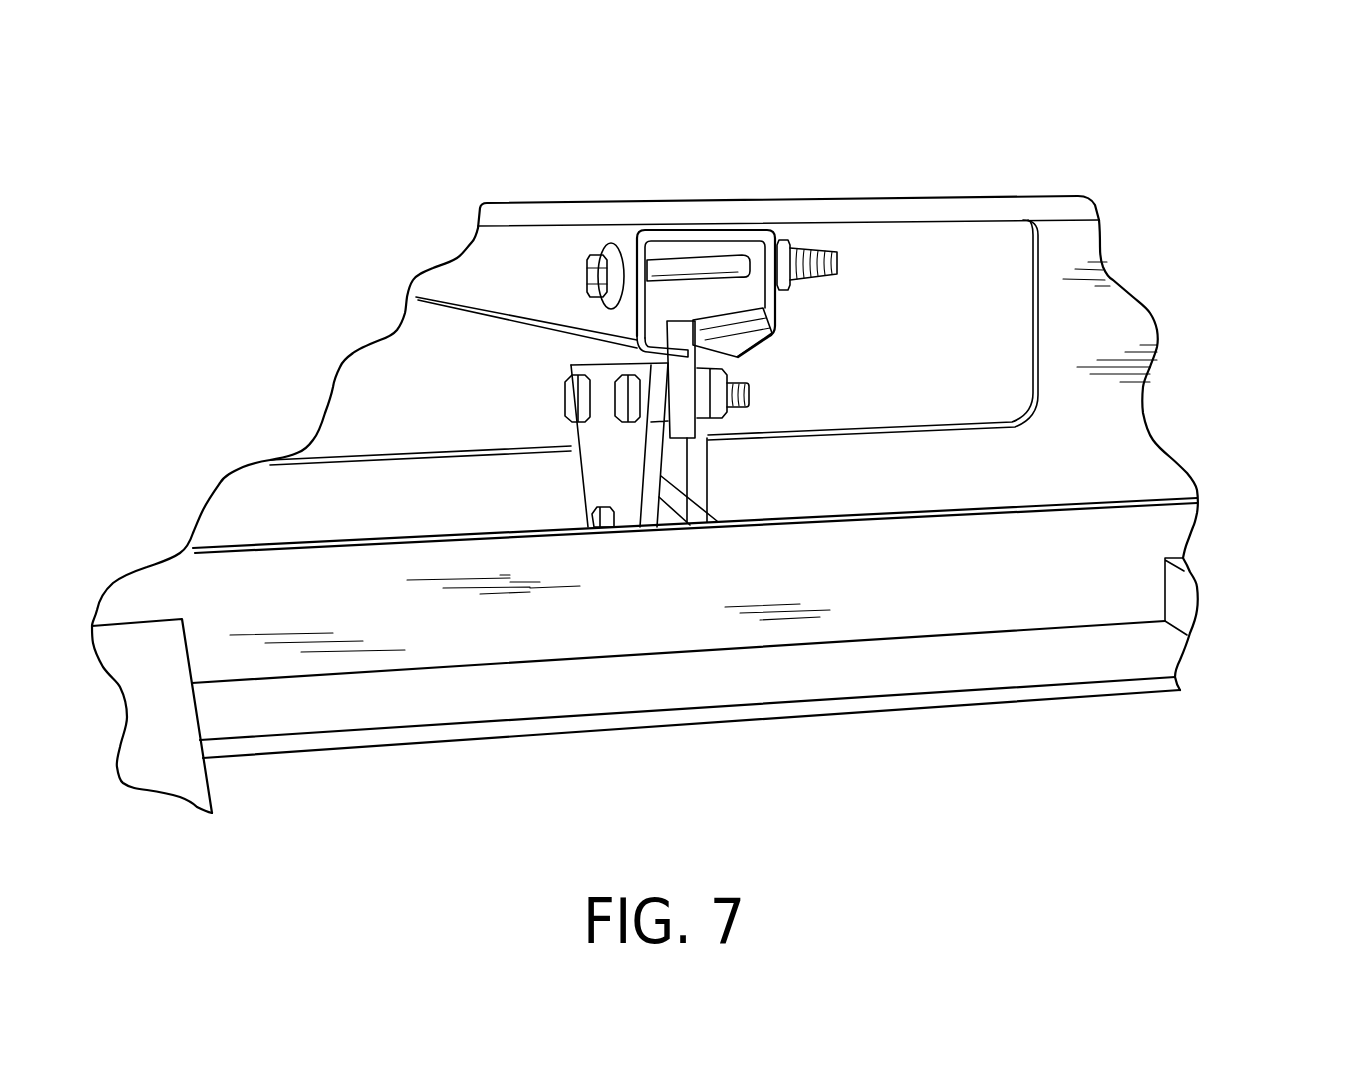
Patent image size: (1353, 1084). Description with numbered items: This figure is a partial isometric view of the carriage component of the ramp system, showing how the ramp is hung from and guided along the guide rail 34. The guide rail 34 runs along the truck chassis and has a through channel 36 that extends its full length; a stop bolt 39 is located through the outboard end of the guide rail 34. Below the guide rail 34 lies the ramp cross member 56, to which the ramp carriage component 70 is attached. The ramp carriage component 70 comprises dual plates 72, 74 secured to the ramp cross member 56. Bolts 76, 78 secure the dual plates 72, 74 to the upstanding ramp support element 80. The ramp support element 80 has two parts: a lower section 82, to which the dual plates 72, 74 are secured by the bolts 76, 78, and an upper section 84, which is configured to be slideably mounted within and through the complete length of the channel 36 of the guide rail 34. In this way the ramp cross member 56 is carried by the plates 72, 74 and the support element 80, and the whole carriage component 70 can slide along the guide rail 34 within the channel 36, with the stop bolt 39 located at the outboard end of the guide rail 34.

The guide rail 34 is at (550, 245).
The through channel 36 is at (684, 243).
The stop bolt 39 is at (713, 262).
The ramp cross member 56 is at (1093, 560).
The ramp carriage component 70 is at (602, 380).
The plate 72 is at (607, 462).
The plate 74 is at (708, 475).
The bolt 76 is at (565, 393).
The bolt 78 is at (747, 387).
The ramp support element 80 is at (757, 305).
The lower section 82 is at (683, 428).
The upper section 84 is at (670, 305).